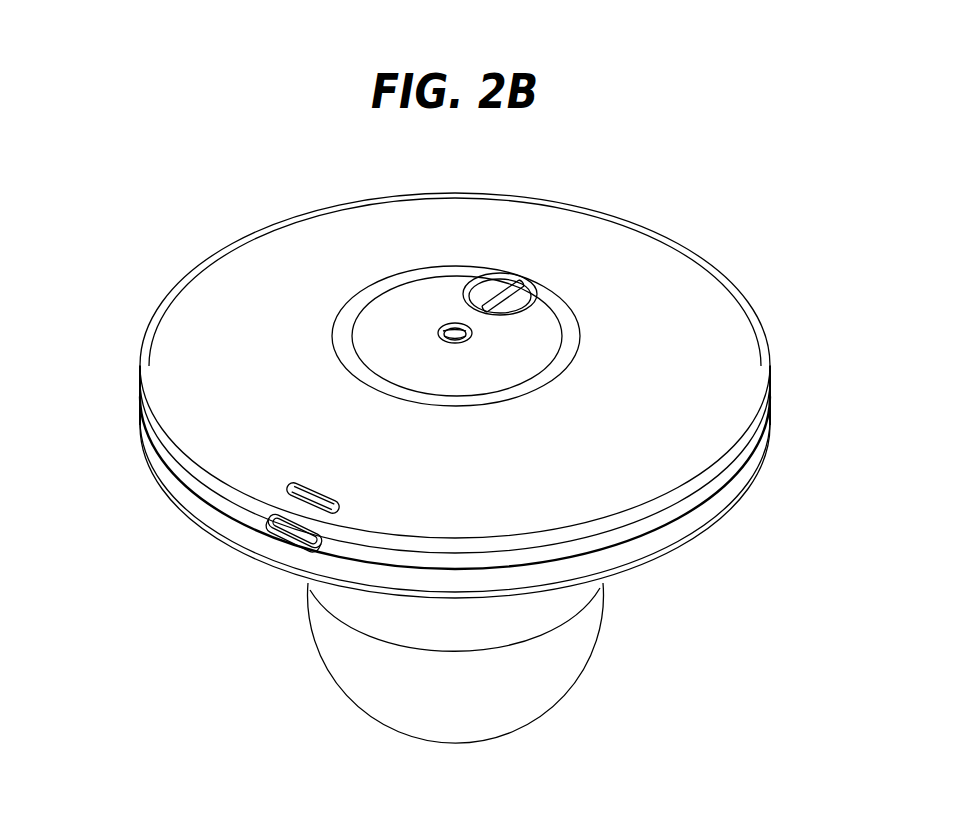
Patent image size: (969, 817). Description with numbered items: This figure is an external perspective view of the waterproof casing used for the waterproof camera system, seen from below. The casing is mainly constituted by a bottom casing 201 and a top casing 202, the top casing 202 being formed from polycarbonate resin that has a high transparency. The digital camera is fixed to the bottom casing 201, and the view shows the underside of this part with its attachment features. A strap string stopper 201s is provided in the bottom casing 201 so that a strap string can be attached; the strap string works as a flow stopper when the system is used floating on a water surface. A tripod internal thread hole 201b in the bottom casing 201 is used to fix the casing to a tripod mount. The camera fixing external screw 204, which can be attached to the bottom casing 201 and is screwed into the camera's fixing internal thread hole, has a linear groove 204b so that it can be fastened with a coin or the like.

The bottom casing 201 is at (688, 357).
The tripod internal thread hole 201b is at (447, 320).
The strap string stopper 201s is at (312, 484).
The top casing 202 is at (687, 528).
The camera fixing external screw 204 is at (518, 300).
The linear groove 204b is at (508, 292).